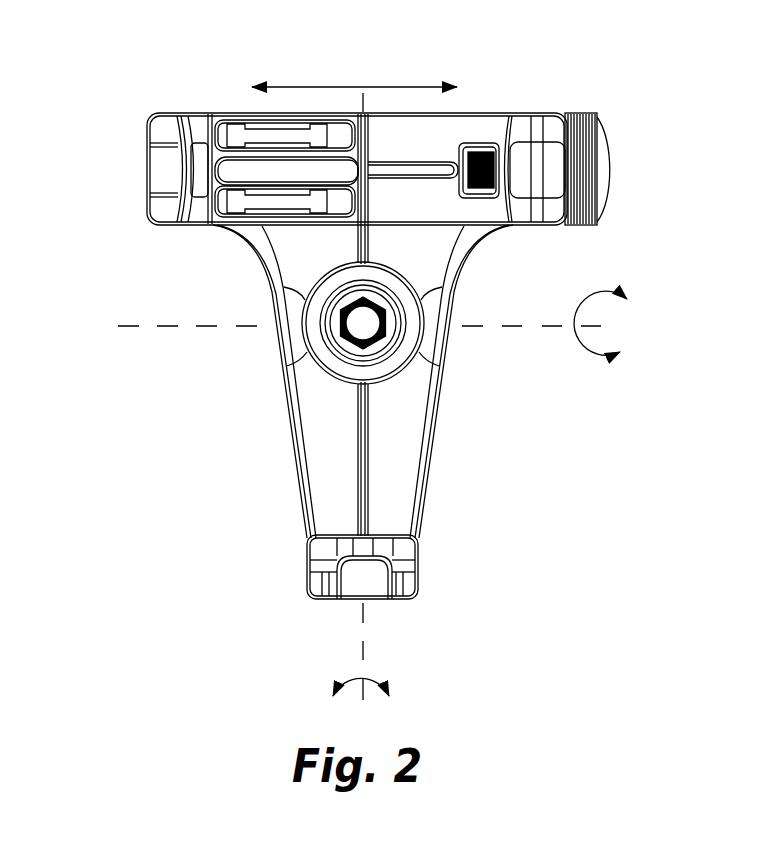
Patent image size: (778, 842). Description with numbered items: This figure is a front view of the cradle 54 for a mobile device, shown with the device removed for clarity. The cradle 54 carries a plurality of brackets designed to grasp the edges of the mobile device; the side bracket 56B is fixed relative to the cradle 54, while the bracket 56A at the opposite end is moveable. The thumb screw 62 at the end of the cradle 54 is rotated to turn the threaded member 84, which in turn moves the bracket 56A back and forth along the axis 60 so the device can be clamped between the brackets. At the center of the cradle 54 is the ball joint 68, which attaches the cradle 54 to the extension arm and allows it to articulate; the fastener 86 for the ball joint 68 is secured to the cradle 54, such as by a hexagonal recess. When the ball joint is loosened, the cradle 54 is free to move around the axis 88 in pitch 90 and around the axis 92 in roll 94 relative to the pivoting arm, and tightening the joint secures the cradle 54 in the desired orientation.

The cradle 54 is at (322, 437).
The bracket 56A is at (558, 120).
The side bracket 56B is at (196, 154).
The axis 60 is at (340, 87).
The thumb screw 62 is at (598, 117).
The ball joint 68 is at (314, 338).
The threaded member 84 is at (475, 113).
The fastener 86 is at (340, 321).
The axis 88 is at (520, 327).
The pitch 90 is at (588, 305).
The axis 92 is at (365, 613).
The roll 94 is at (388, 663).